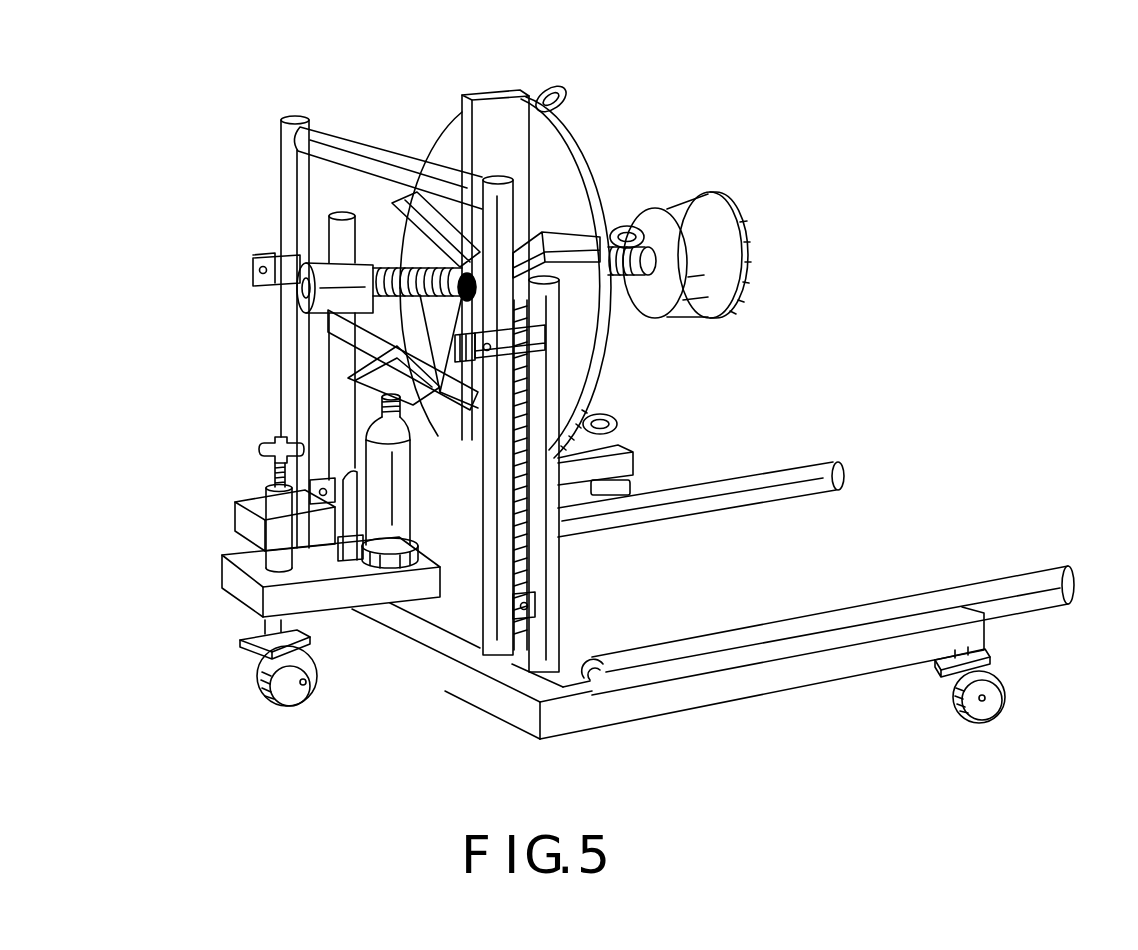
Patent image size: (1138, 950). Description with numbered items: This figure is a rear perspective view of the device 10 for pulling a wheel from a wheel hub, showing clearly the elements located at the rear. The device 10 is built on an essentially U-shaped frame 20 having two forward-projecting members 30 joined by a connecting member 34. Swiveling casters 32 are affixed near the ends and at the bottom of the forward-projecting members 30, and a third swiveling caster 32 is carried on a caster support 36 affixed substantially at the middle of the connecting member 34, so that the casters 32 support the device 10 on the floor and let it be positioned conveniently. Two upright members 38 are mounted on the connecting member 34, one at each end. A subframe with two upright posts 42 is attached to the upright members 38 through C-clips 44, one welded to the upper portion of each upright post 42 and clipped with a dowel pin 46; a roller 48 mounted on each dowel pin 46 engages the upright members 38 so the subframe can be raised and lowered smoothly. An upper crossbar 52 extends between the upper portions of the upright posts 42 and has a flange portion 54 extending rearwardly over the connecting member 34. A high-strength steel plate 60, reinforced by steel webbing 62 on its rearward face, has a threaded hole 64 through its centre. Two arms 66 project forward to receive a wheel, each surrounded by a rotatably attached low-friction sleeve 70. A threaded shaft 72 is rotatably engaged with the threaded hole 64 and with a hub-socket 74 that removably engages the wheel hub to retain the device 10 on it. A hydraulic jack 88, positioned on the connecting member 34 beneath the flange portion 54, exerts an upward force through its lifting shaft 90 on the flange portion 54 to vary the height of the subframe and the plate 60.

The device 10 is at (156, 219).
The frame 20 is at (537, 742).
The forward-projecting members 30 is at (830, 687).
The swiveling casters 32 is at (263, 670).
The connecting member 34 is at (480, 705).
The caster support 36 is at (222, 562).
The upright members 38 is at (282, 172).
The upright posts 42 is at (281, 210).
The C-clips 44 is at (523, 340).
The dowel pin 46 is at (540, 367).
The roller 48 is at (462, 298).
The upper crossbar 52 is at (440, 332).
The flange portion 54 is at (357, 386).
The plate 60 is at (578, 146).
The reinforcing steel webbing 62 is at (463, 97).
The threaded hole 64 is at (468, 262).
The arms 66 is at (568, 670).
The sleeve 70 is at (640, 530).
The threaded shaft 72 is at (642, 318).
The hub-socket 74 is at (746, 272).
The hydraulic jack 88 is at (380, 523).
The lifting shaft 90 is at (385, 403).